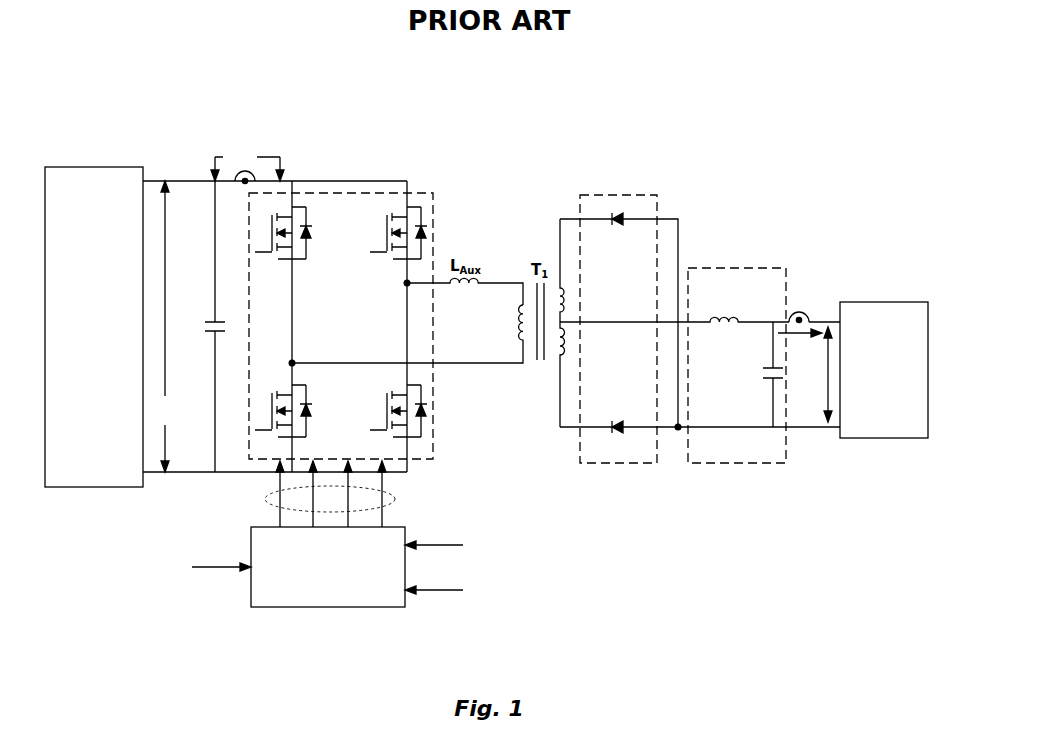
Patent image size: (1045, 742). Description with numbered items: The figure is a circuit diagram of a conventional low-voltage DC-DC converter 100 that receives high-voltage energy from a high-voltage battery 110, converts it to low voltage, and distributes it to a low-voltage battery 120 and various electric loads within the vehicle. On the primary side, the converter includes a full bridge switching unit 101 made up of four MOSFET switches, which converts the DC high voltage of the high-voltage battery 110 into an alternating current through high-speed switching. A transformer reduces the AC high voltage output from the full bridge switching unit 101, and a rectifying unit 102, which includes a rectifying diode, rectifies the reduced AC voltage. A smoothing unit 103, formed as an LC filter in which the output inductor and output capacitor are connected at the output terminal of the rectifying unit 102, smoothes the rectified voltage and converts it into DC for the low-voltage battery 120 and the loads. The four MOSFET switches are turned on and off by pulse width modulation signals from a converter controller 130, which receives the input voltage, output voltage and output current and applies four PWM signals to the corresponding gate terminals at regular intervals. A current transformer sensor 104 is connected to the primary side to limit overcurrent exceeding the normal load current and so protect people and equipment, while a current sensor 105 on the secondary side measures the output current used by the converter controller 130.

The low-voltage DC-DC converter 100 is at (425, 150).
The full bridge switching unit 101 is at (433, 447).
The rectifying unit 102 is at (627, 463).
The smoothing unit 103 is at (738, 463).
The current transformer (CT) sensor 104 is at (268, 178).
The current sensor 105 is at (808, 314).
The high-voltage battery 110 is at (95, 487).
The low-voltage battery 120 is at (880, 438).
The converter controller 130 is at (331, 607).